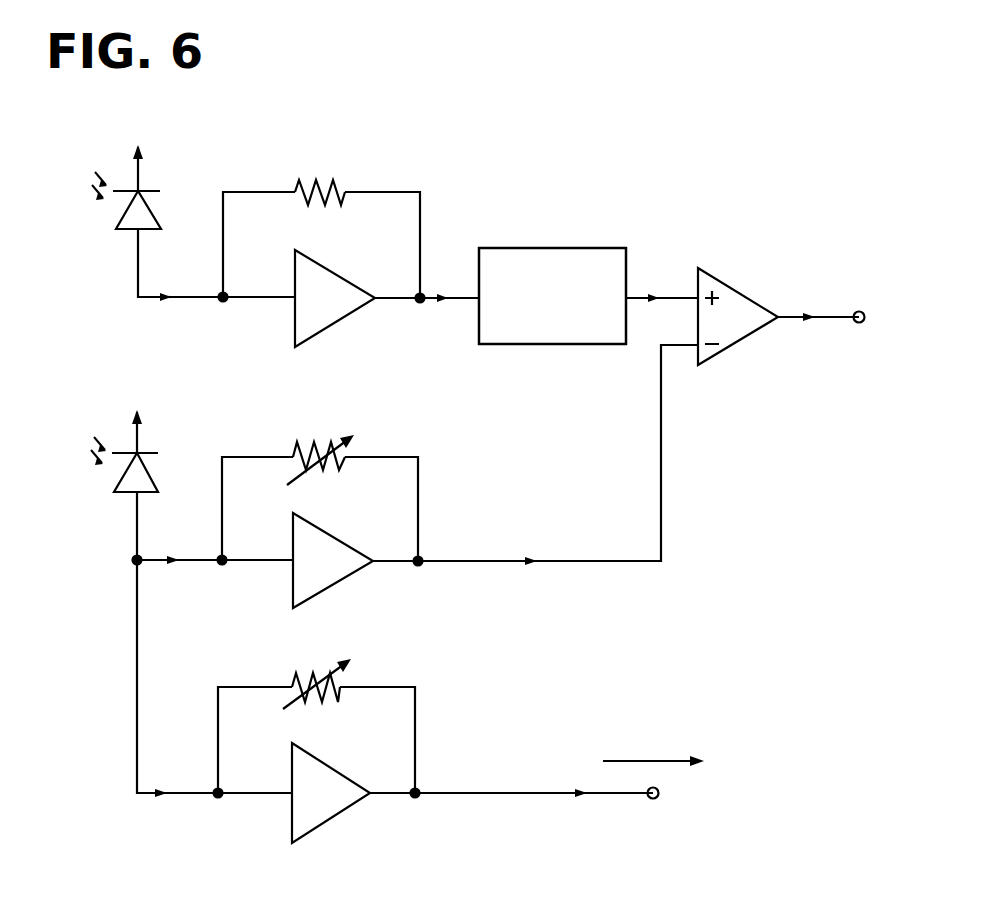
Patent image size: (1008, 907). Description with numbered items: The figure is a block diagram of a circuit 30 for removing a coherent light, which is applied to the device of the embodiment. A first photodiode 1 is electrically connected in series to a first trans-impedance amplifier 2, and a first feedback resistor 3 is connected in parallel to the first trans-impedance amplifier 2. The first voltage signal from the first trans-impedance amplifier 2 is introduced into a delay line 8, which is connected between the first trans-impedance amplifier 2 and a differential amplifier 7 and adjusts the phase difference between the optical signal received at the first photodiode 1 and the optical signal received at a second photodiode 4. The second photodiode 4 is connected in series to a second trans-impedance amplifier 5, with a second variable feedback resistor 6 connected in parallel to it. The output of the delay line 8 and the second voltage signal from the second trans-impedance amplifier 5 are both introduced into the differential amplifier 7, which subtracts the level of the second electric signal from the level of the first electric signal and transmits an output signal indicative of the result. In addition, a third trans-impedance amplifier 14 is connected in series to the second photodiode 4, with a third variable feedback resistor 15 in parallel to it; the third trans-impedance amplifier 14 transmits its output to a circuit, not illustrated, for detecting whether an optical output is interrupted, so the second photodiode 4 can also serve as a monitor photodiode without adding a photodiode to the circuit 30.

The circuit 30 is at (583, 86).
The first photodiode 1 is at (120, 220).
The first trans-impedance amplifier 2 is at (325, 334).
The first feedback resistor 3 is at (338, 182).
The delay line 8 is at (580, 248).
The differential amplifier 7 is at (733, 284).
The second photodiode 4 is at (118, 487).
The second trans-impedance amplifier 5 is at (322, 596).
The second variable feedback resistor 6 is at (315, 441).
The third trans-impedance amplifier 14 is at (292, 812).
The third variable feedback resistor 15 is at (310, 673).